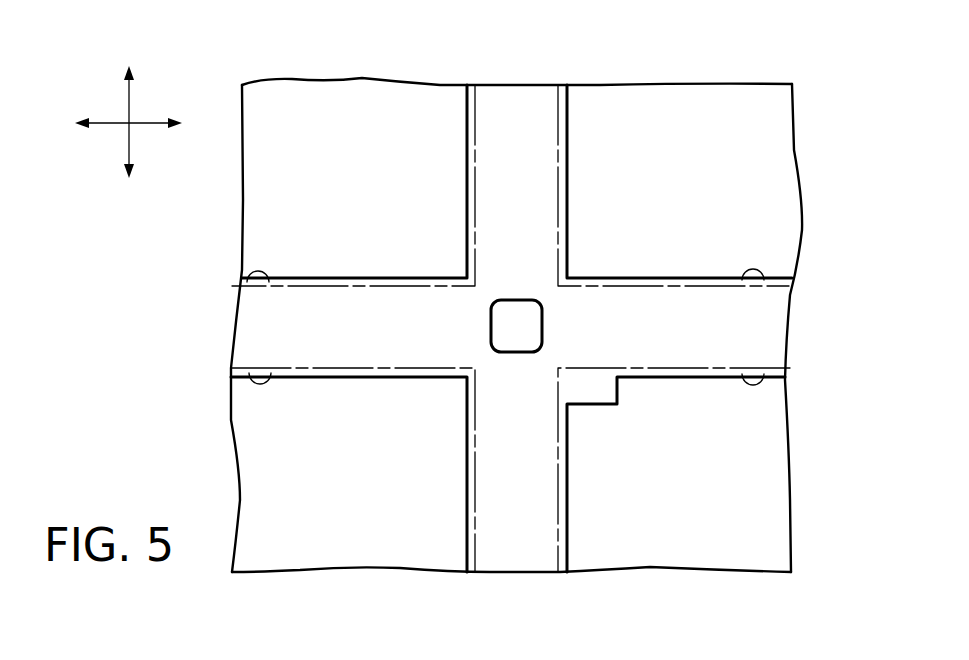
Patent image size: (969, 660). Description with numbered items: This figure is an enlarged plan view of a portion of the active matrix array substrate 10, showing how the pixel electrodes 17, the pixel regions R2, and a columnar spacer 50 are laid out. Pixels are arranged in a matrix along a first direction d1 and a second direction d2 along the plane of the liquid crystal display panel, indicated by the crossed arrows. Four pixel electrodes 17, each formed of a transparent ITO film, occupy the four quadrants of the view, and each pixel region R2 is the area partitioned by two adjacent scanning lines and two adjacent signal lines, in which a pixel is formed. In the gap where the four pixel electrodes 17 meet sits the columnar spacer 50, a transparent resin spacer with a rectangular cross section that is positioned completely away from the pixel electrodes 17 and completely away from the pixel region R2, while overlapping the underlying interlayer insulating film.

The active matrix array substrate 10 is at (806, 172).
The pixel electrode 17 is at (558, 103).
The columnar spacer 50 is at (543, 326).
The pixel region R2 is at (240, 290).
The first direction d1 is at (101, 126).
The second direction d2 is at (131, 101).